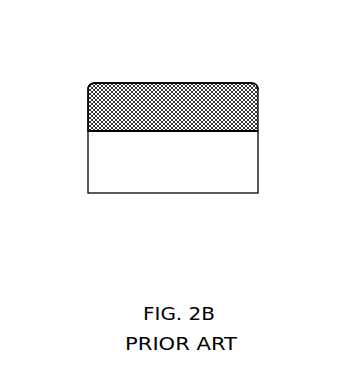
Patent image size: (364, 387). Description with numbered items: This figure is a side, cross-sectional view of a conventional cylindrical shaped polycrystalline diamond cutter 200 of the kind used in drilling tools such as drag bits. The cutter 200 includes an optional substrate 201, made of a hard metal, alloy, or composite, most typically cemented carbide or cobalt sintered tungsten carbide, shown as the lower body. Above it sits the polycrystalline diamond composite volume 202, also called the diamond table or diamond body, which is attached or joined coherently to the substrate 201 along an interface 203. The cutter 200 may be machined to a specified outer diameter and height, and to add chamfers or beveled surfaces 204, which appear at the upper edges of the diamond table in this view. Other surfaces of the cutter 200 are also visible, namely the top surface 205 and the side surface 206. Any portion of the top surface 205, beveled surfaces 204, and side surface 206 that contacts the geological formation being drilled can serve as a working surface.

The polycrystalline diamond cutter 200 is at (165, 109).
The substrate 201 is at (245, 158).
The polycrystalline diamond composite volume 202 is at (115, 83).
The interface 203 is at (88, 132).
The chamfers or beveled surfaces 204 is at (88, 85).
The top surface 205 is at (200, 82).
The side surface 206 is at (87, 103).